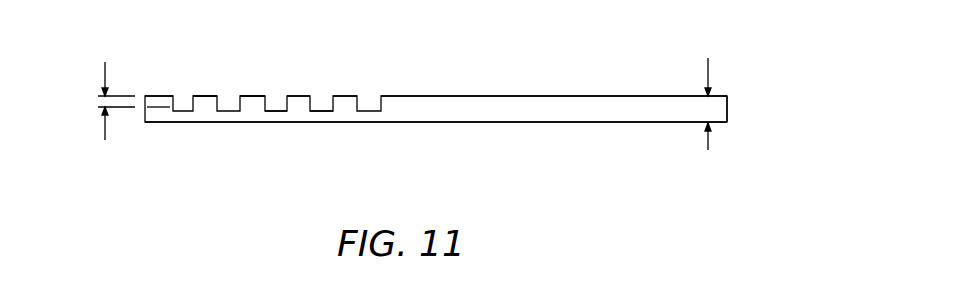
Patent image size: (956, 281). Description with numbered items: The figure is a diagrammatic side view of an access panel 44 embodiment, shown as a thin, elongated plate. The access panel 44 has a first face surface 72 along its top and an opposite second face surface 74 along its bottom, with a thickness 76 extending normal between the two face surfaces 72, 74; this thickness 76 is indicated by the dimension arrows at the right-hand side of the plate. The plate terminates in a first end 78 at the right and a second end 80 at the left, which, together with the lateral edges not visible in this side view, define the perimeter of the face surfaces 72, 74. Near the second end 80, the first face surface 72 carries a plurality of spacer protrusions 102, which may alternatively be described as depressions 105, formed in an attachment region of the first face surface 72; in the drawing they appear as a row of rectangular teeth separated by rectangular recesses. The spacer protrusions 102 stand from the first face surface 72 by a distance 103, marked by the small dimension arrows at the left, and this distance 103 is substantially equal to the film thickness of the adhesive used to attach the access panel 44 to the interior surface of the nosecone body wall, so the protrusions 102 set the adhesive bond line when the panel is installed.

The access panel 44 is at (274, 124).
The first face surface 72 is at (617, 95).
The second face surface 74 is at (623, 123).
The thickness 76 is at (708, 72).
The first end 78 is at (727, 112).
The second end 80 is at (145, 113).
The spacer protrusions 102 is at (252, 95).
The distance 103 is at (105, 141).
The depressions 105 is at (318, 108).